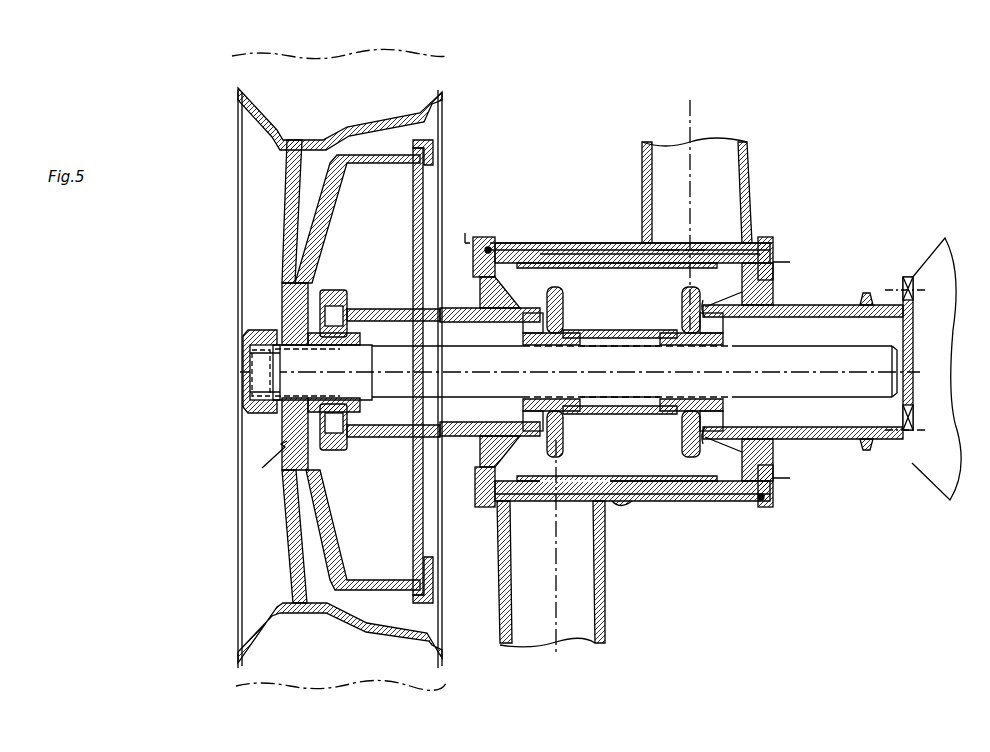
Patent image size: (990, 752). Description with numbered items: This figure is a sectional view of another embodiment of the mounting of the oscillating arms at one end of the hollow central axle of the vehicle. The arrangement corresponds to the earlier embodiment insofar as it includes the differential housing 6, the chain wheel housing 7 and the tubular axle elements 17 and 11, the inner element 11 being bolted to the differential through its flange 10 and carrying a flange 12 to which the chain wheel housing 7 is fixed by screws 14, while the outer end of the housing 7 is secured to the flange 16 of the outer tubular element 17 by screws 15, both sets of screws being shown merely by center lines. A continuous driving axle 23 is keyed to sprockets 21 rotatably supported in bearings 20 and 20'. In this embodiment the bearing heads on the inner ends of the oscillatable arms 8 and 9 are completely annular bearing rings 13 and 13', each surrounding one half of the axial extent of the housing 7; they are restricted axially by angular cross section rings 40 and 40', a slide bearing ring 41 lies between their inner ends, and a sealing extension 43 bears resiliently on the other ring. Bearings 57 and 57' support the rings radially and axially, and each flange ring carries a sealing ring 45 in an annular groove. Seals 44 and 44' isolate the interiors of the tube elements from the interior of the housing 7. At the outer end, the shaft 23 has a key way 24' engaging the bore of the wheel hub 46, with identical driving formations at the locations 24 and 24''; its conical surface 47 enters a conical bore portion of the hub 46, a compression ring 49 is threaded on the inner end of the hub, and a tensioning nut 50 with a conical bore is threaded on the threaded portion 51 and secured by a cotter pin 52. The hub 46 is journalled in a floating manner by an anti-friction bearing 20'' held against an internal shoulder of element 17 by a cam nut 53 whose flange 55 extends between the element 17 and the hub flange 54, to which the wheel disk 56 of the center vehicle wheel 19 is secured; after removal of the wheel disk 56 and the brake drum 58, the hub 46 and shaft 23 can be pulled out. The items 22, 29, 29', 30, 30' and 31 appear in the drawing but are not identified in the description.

The differential 6 is at (942, 262).
The chain wheel housing 7 is at (532, 250).
The oscillatable arm 8 is at (750, 180).
The oscillatable arm 9 is at (600, 618).
The flange 10 is at (905, 445).
The tubular axle element 11 is at (842, 440).
The flange 12 is at (768, 290).
The bearing ring 13 is at (631, 219).
The bearing ring 13' is at (667, 227).
The screws 14 is at (788, 262).
The screws 15 is at (466, 238).
The flange 16 is at (480, 292).
The tubular axle element 17 is at (553, 371).
The center vehicle wheel 19 is at (346, 643).
The bearing 20 is at (525, 372).
The bearing 20' is at (709, 372).
The anti-friction bearing 20'' is at (352, 442).
The sprocket 21 is at (563, 312).
The spacer sleeve 22 is at (636, 330).
The driving axle 23 is at (813, 371).
The key way 24 is at (620, 371).
The key way 24' is at (322, 372).
The key way 24'' is at (873, 371).
The opening 29 is at (575, 515).
The opening 29' is at (707, 227).
The pipe axis 30 is at (578, 558).
The pipe axis 30' is at (720, 210).
The plate 31 is at (584, 252).
The angular cross section ring 40 is at (480, 240).
The angular cross section ring 40' is at (792, 243).
The bearing ring 41 is at (620, 264).
The sealing extension 43 is at (625, 505).
The seal 44 is at (490, 372).
The seal 44' is at (711, 356).
The sealing ring 45 is at (486, 507).
The wheel hub 46 is at (290, 417).
The conical surface 47 is at (360, 345).
The compression ring 49 is at (365, 309).
The tensioning nut 50 is at (268, 332).
The threaded portion 51 is at (250, 369).
The cotter pin 52 is at (250, 389).
The cam nut 53 is at (333, 290).
The flange 54 is at (312, 472).
The flange 55 is at (266, 462).
The wheel disk 56 is at (308, 268).
The bearing 57 is at (497, 222).
The bearing 57' is at (745, 520).
The brake drum 58 is at (290, 518).